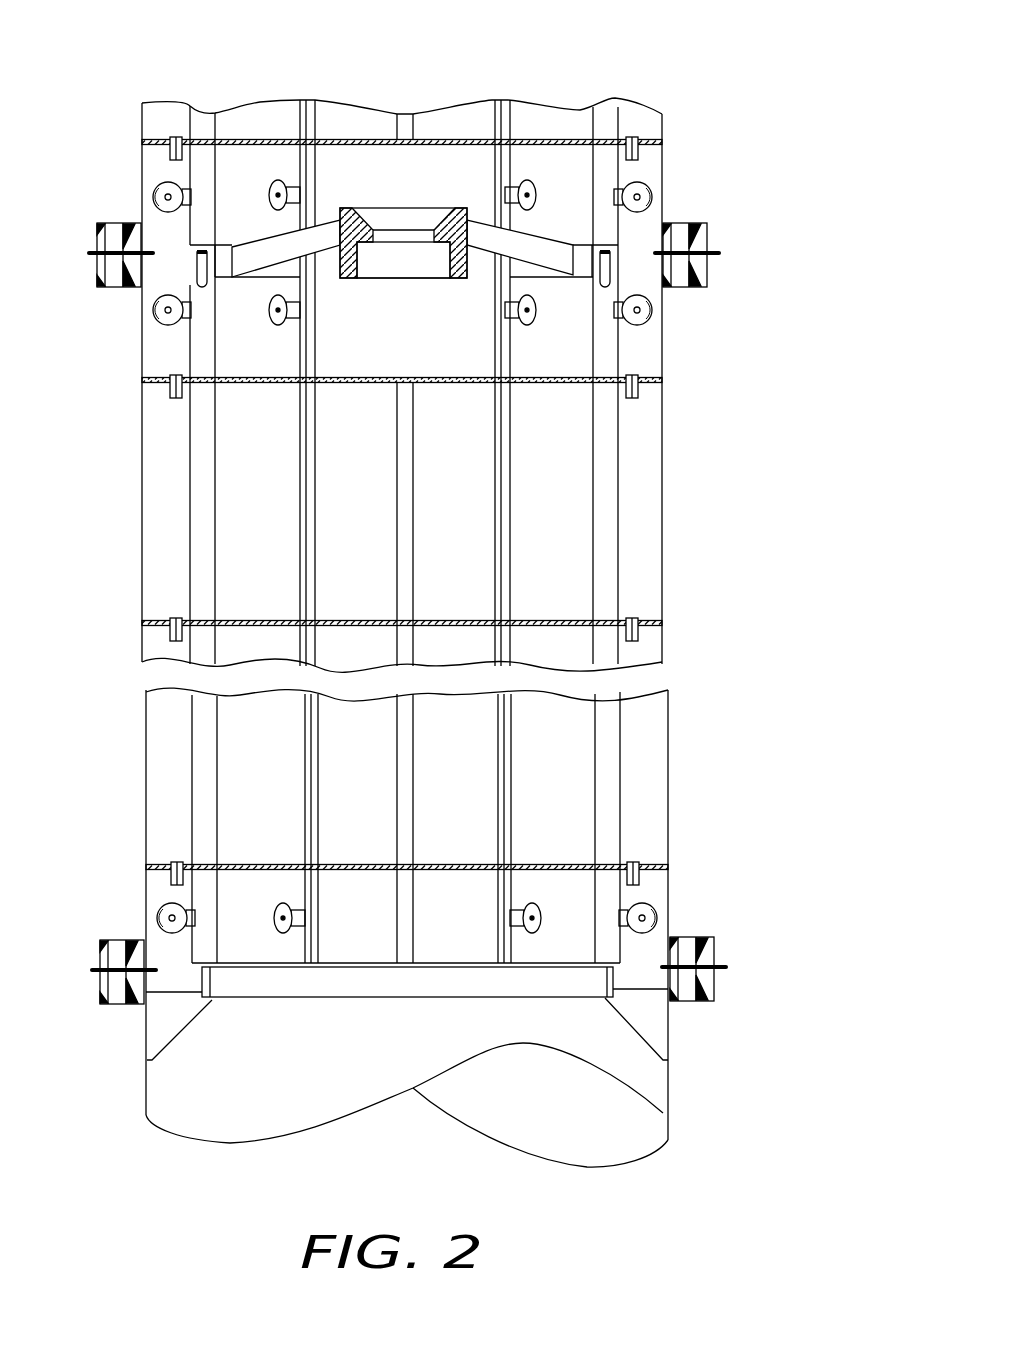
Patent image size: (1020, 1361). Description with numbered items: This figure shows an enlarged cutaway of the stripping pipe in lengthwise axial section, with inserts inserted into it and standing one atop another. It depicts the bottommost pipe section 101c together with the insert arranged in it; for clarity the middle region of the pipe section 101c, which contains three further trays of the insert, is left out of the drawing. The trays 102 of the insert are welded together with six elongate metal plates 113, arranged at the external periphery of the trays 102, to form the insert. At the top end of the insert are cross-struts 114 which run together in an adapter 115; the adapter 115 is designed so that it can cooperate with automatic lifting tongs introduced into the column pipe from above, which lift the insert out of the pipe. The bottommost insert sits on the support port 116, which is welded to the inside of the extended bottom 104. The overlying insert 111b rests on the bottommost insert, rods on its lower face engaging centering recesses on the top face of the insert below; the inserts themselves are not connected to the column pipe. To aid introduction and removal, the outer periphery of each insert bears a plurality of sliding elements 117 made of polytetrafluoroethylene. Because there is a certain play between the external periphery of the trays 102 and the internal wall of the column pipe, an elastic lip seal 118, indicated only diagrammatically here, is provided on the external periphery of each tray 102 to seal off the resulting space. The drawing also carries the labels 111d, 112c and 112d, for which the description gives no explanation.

The bottommost pipe section 101c is at (664, 580).
The trays 102 is at (567, 140).
The extended bottom 104 is at (670, 1100).
The overlying insert 111b is at (455, 126).
The frame member 111d is at (708, 522).
The clamp assembly 112c is at (744, 233).
The clamp assembly 112d is at (750, 937).
The elongate metal plates 113 is at (306, 472).
The cross-struts 114 is at (262, 248).
The adapter 115 is at (402, 218).
The support port 116 is at (160, 1022).
The sliding elements 117 is at (655, 323).
The elastic lip seal 118 is at (660, 630).